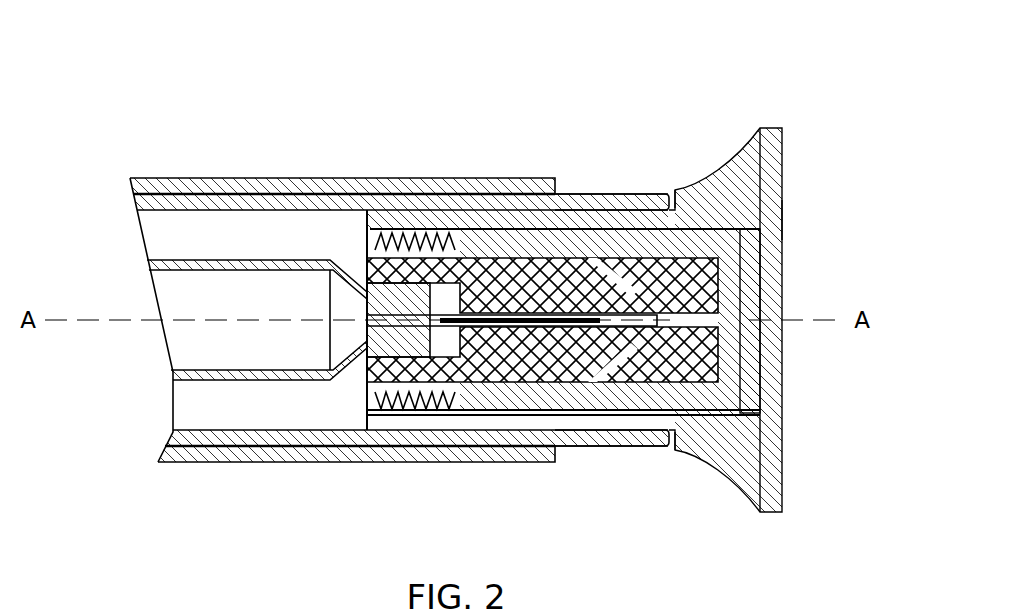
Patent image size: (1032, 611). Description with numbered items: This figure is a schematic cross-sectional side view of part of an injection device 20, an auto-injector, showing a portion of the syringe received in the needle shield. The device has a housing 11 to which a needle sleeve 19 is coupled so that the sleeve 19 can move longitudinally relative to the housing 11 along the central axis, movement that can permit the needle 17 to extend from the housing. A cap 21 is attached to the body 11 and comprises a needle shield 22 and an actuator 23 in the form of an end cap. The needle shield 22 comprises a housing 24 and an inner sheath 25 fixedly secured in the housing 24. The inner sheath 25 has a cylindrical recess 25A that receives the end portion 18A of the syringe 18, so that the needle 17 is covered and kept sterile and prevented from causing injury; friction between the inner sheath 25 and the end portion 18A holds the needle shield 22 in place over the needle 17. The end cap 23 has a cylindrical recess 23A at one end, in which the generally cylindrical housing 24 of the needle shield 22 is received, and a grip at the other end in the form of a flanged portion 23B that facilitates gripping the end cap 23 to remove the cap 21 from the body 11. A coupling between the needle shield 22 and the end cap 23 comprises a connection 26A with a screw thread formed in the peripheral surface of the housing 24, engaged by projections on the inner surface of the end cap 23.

The housing 11 is at (213, 453).
The needle 17 is at (452, 316).
The syringe 18 is at (277, 378).
The end portion of the syringe 18A is at (400, 347).
The needle sleeve 19 is at (650, 443).
The injection device 20 is at (150, 121).
The cap 21 is at (756, 96).
The needle shield 22 is at (822, 224).
The actuator 23 is at (755, 472).
The cylindrical recess 23A is at (748, 398).
The flanged portion 23B is at (767, 172).
The housing 24 is at (640, 242).
The inner sheath 25 is at (548, 272).
The cylindrical recess 25A is at (442, 338).
The connection 26A is at (408, 201).